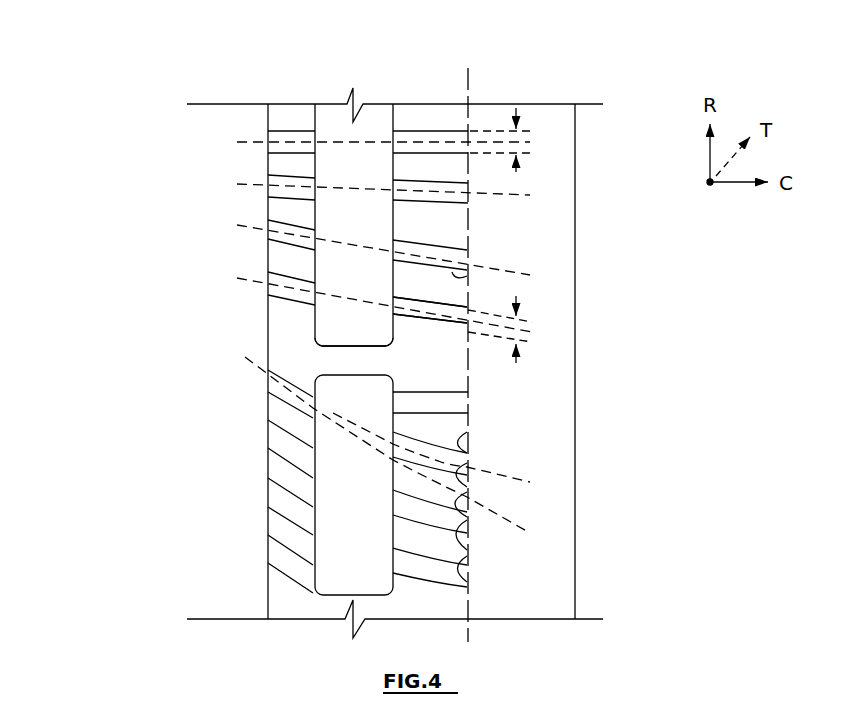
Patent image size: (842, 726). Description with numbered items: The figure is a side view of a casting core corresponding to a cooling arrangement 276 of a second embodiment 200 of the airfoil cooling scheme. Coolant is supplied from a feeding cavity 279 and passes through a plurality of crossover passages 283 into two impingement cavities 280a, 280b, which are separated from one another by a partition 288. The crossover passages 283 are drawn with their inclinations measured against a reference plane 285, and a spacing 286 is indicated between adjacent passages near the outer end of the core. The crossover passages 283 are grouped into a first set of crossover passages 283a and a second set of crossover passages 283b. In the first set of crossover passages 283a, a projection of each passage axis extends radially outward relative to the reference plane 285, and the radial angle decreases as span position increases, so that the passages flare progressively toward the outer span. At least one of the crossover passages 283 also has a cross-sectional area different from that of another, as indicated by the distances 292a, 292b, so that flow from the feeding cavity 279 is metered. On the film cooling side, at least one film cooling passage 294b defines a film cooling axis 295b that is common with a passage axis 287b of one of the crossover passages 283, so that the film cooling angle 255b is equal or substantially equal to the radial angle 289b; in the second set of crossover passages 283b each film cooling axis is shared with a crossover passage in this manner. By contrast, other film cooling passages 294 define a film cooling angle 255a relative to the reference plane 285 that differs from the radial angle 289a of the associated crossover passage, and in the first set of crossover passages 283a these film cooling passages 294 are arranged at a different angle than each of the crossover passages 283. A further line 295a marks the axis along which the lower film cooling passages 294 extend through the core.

The second embodiment 200 is at (108, 94).
The cooling arrangement 276 is at (242, 99).
The feeding cavity 279 is at (572, 135).
The impingement cavity 280a is at (314, 118).
The impingement cavity 280b is at (313, 545).
The crossover passages 283 is at (452, 305).
The first set of crossover passages 283a is at (493, 419).
The second set of crossover passages 283b is at (440, 70).
The reference plane 285 is at (470, 80).
The rib spacing 286 is at (468, 116).
The partition 288 is at (372, 369).
The distance 292a is at (517, 172).
The distance 292b is at (516, 296).
The passage axis 287b is at (236, 278).
The film cooling axis 295b is at (384, 278).
The film cooling passage 294b is at (288, 280).
The film cooling passages 294 is at (270, 422).
The film cooling angle 255b is at (447, 318).
The radial angle 289b is at (430, 310).
The radial angle 289a is at (460, 473).
The rib axis 295a is at (326, 412).
The film cooling angle 255a is at (455, 527).